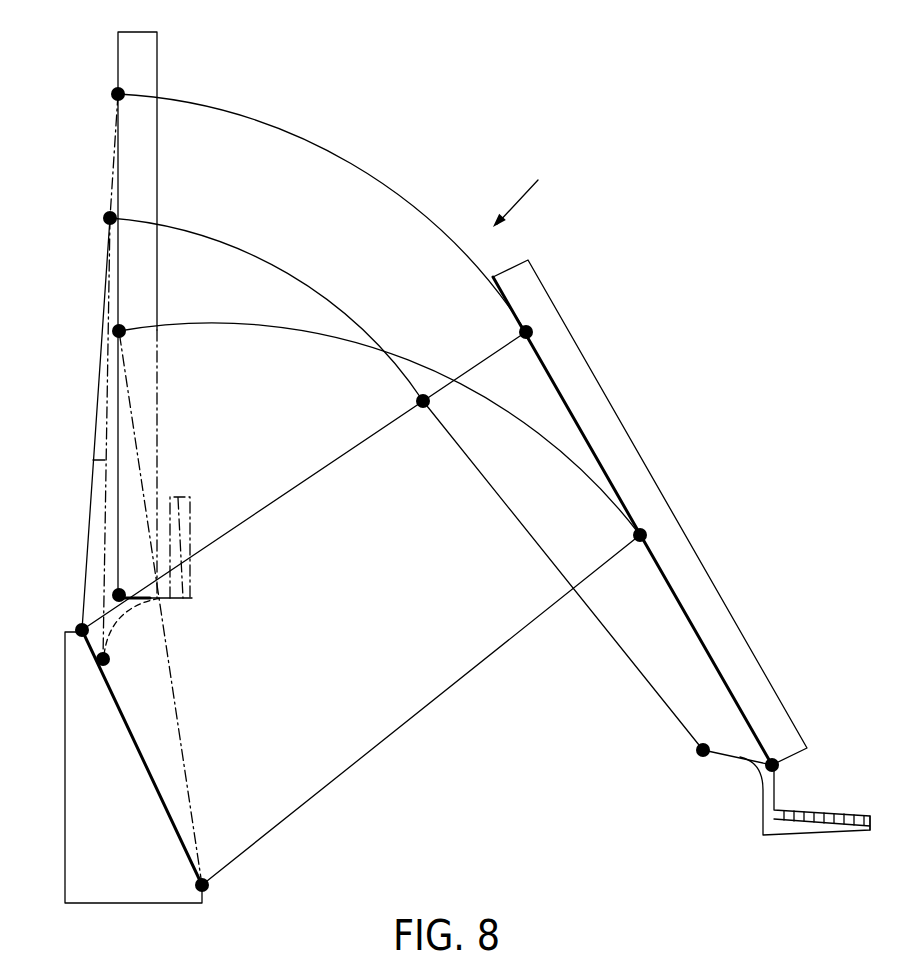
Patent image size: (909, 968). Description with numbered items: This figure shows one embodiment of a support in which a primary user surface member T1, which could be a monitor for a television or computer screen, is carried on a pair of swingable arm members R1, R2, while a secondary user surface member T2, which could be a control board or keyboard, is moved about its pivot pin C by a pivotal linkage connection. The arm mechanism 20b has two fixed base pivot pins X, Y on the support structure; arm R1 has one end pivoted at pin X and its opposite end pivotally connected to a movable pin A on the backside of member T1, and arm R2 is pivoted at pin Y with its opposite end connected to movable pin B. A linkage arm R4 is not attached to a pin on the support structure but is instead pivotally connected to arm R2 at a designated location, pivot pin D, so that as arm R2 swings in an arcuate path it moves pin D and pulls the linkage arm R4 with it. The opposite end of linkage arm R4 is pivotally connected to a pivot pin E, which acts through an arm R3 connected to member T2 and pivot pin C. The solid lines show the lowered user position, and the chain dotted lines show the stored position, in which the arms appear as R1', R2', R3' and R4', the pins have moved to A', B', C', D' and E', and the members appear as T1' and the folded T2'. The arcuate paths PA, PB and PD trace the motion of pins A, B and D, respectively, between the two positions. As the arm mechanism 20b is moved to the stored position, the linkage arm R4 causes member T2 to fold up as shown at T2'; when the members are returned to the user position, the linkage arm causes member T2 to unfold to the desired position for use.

The arm mechanism 20b is at (533, 188).
The primary user surface member T1 is at (650, 512).
The primary user surface member in stored position T1' is at (176, 315).
The secondary user surface member T2 is at (822, 797).
The secondary user surface member in folded stored position T2' is at (191, 547).
The movable pivot pin B is at (501, 322).
The pivot pin B in stored position B' is at (102, 78).
The pivot pin D is at (404, 389).
The pivot pin D in stored position D' is at (86, 230).
The movable pivot pin A is at (616, 523).
The pivot pin A in stored position A' is at (95, 315).
The pivot pin C is at (805, 740).
The pivot pin C in stored position C' is at (90, 582).
The pivot pin E is at (674, 758).
The pivot pin E in stored position E' is at (122, 675).
The fixed base pivot pin X is at (208, 886).
The fixed base pivot pin Y is at (78, 636).
The swingable arm member R1 is at (421, 710).
The swingable arm member in stored position R1' is at (179, 608).
The swingable arm member R2 is at (304, 481).
The swingable arm member in stored position R2' is at (86, 362).
The arm connecting pin E to member T2 R3 is at (786, 792).
The arm R3 in stored position R3' is at (134, 626).
The linkage arm R4 is at (563, 575).
The linkage arm in stored position R4' is at (82, 438).
The arcuate path of pin A PA is at (265, 330).
The arcuate path of pin B PB is at (383, 184).
The arcuate path of pin D PD is at (310, 284).